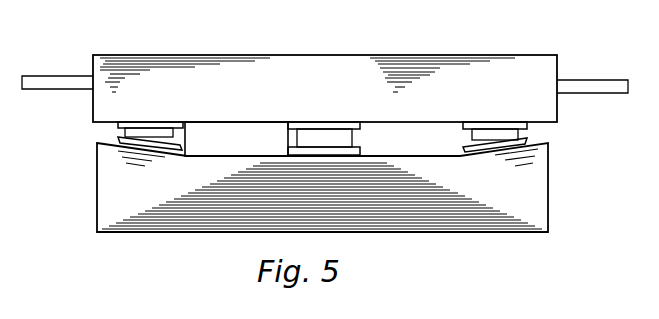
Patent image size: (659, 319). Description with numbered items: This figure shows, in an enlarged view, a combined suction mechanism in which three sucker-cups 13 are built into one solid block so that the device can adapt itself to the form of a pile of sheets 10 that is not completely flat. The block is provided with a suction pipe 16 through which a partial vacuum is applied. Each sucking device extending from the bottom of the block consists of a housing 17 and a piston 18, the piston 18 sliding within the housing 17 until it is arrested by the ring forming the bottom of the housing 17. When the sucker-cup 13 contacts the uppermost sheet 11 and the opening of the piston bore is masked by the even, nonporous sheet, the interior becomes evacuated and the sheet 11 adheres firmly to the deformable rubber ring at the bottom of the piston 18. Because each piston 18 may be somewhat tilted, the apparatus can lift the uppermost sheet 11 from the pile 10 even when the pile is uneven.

The pile of sheets 10 is at (522, 200).
The uppermost sheet 11 is at (242, 158).
The sucker-cup 13 is at (521, 97).
The suction pipe 16 is at (583, 89).
The housing 17 is at (118, 126).
The piston 18 is at (118, 138).